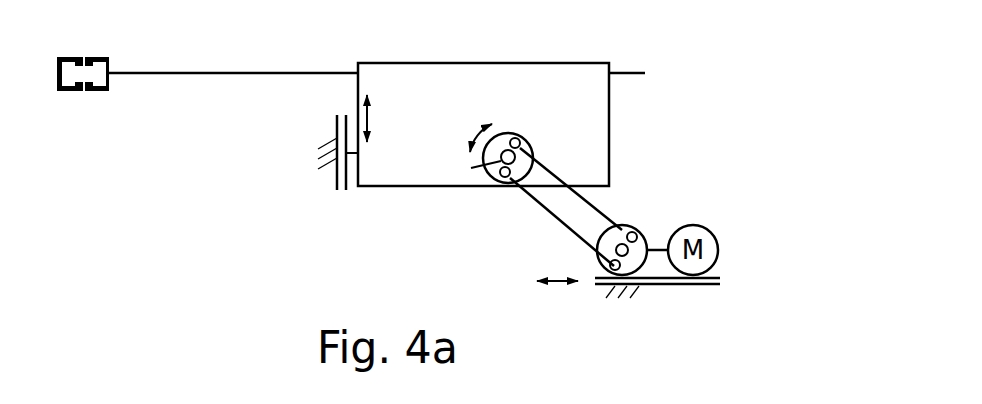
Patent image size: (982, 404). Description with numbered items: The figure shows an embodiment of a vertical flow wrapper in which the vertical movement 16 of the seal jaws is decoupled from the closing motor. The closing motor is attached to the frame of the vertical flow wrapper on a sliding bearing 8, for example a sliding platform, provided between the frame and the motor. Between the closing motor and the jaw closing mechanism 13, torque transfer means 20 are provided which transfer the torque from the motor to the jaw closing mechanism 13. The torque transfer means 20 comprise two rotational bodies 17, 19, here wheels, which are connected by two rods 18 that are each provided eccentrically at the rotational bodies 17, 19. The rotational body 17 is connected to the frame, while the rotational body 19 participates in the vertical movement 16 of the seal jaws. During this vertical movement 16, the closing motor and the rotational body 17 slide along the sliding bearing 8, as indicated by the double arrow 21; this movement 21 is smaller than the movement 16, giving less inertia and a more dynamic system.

The sliding bearing 8 is at (688, 291).
The jaw closing mechanism 13 is at (471, 179).
The movement of the seal jaws 16 is at (367, 101).
The rotational body 17 is at (640, 230).
The rods 18 is at (553, 174).
The rotational body 19 is at (507, 142).
The torque transfer means 20 is at (584, 108).
The double arrow 21 is at (558, 282).